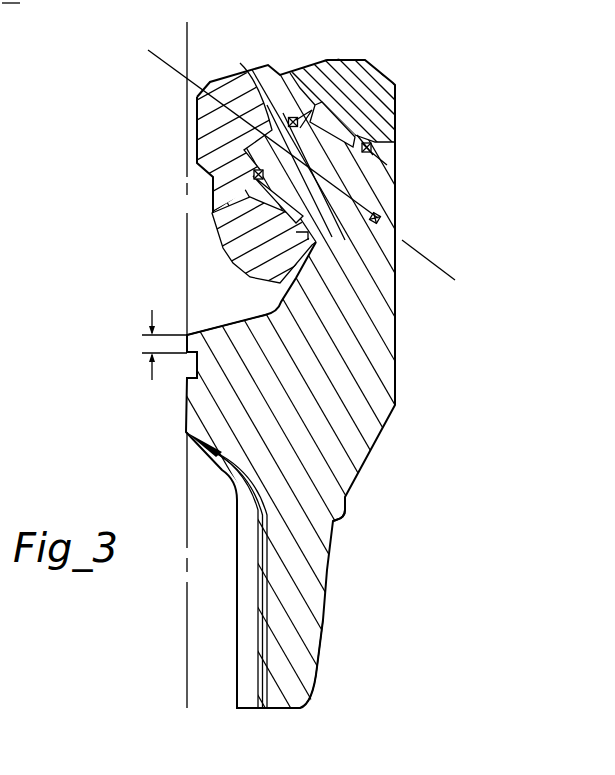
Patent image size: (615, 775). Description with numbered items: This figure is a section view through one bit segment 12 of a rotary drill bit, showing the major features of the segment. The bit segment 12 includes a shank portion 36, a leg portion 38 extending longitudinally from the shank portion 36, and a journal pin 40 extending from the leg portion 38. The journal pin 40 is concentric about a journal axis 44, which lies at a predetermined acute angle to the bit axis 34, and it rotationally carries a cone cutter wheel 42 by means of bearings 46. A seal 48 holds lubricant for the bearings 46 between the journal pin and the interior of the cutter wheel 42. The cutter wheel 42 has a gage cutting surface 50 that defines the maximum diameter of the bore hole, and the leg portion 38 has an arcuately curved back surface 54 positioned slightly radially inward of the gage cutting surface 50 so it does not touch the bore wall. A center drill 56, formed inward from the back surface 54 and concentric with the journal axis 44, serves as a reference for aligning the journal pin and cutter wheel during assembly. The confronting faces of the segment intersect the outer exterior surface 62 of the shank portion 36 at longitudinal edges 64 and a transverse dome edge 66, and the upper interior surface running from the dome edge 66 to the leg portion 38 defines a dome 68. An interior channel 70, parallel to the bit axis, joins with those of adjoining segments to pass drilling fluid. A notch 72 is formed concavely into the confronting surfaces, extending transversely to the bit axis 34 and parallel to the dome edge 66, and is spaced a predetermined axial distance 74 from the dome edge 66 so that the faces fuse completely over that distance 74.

The bit segment 12 is at (173, 592).
The bit axis 34 is at (187, 155).
The shank portion 36 is at (415, 303).
The leg portion 38 is at (413, 295).
The journal pin 40 is at (242, 74).
The cone cutter wheel 42 is at (285, 78).
The journal axis 44 is at (440, 269).
The bearings 46 is at (337, 120).
The seal 48 is at (370, 140).
The gage cutting surface 50 is at (396, 100).
The back surface 54 is at (396, 180).
The center drill 56 is at (377, 221).
The outer exterior surface 62 is at (347, 500).
The longitudinal edges 64 is at (24, 6).
The dome edge 66 is at (187, 335).
The dome 68 is at (232, 323).
The interior channel 70 is at (245, 643).
The notch 72 is at (188, 372).
The axial distance 74 is at (163, 334).